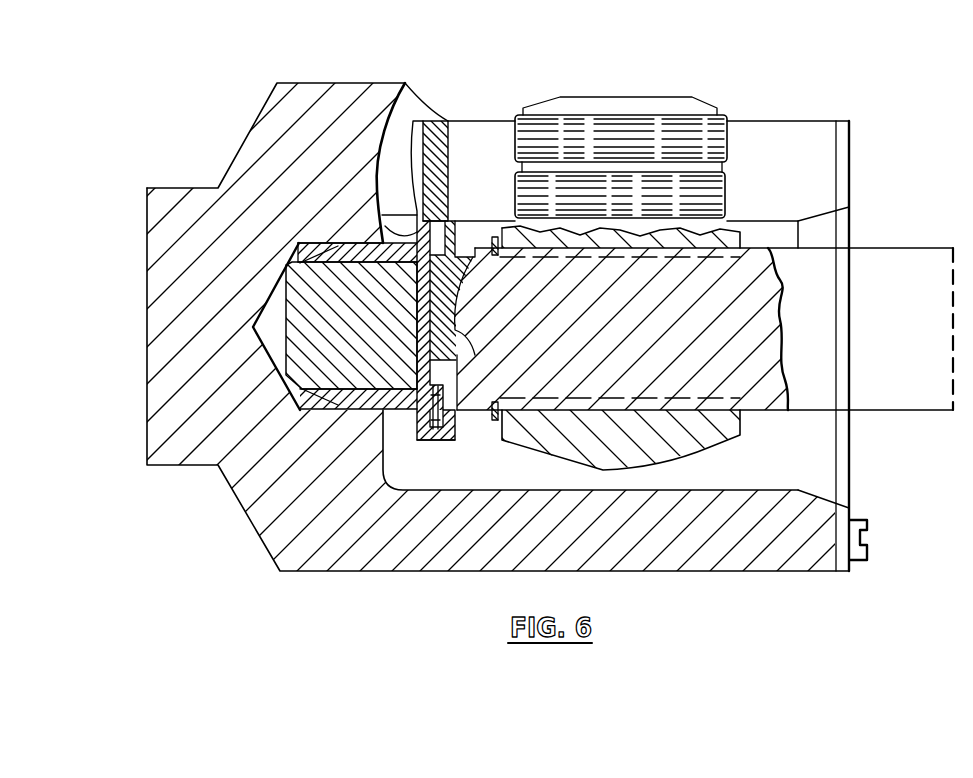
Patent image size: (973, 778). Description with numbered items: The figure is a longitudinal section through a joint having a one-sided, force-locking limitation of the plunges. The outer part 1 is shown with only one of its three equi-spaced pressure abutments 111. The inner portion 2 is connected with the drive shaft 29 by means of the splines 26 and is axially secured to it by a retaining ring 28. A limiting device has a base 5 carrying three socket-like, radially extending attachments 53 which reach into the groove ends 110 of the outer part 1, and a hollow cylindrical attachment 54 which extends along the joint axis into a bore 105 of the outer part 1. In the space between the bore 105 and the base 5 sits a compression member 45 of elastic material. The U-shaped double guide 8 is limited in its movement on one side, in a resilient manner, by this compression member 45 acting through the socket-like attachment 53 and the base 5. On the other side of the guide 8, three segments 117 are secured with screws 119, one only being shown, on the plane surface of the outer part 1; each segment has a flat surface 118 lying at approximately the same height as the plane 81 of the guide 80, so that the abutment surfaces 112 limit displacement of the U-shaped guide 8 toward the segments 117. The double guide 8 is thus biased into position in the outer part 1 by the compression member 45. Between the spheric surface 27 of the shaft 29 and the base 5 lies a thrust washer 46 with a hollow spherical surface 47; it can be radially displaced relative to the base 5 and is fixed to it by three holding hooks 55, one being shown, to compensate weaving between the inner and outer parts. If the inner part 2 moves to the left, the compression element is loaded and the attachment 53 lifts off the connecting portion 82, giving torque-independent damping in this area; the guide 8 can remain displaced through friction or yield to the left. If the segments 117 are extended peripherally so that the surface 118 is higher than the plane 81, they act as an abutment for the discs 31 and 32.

The outer part 1 is at (282, 122).
The inner portion 2 is at (716, 440).
The base 5 is at (383, 236).
The U-shaped double guide 8 is at (766, 121).
The splines 26 is at (658, 375).
The spheric surface 27 is at (465, 370).
The retaining ring 28 is at (520, 413).
The drive shaft 29 is at (910, 412).
The disc 31 is at (578, 123).
The disc 32 is at (645, 180).
The compression member 45 is at (312, 388).
The thrust washer 46 is at (438, 432).
The hollow spherical surface 47 is at (470, 345).
The socket-like attachment 53 is at (428, 121).
The hollow cylindrical attachment 54 is at (340, 222).
The holding hook 55 is at (423, 442).
The guide 80 is at (740, 121).
The plane 81 is at (812, 150).
The connecting portion 82 is at (443, 121).
The bore 105 is at (255, 330).
The groove end 110 is at (402, 112).
The pressure abutment 111 is at (384, 160).
The abutment surface 112 is at (832, 162).
The segment 117 is at (850, 152).
The flat surface 118 is at (846, 186).
The screw 119 is at (870, 551).